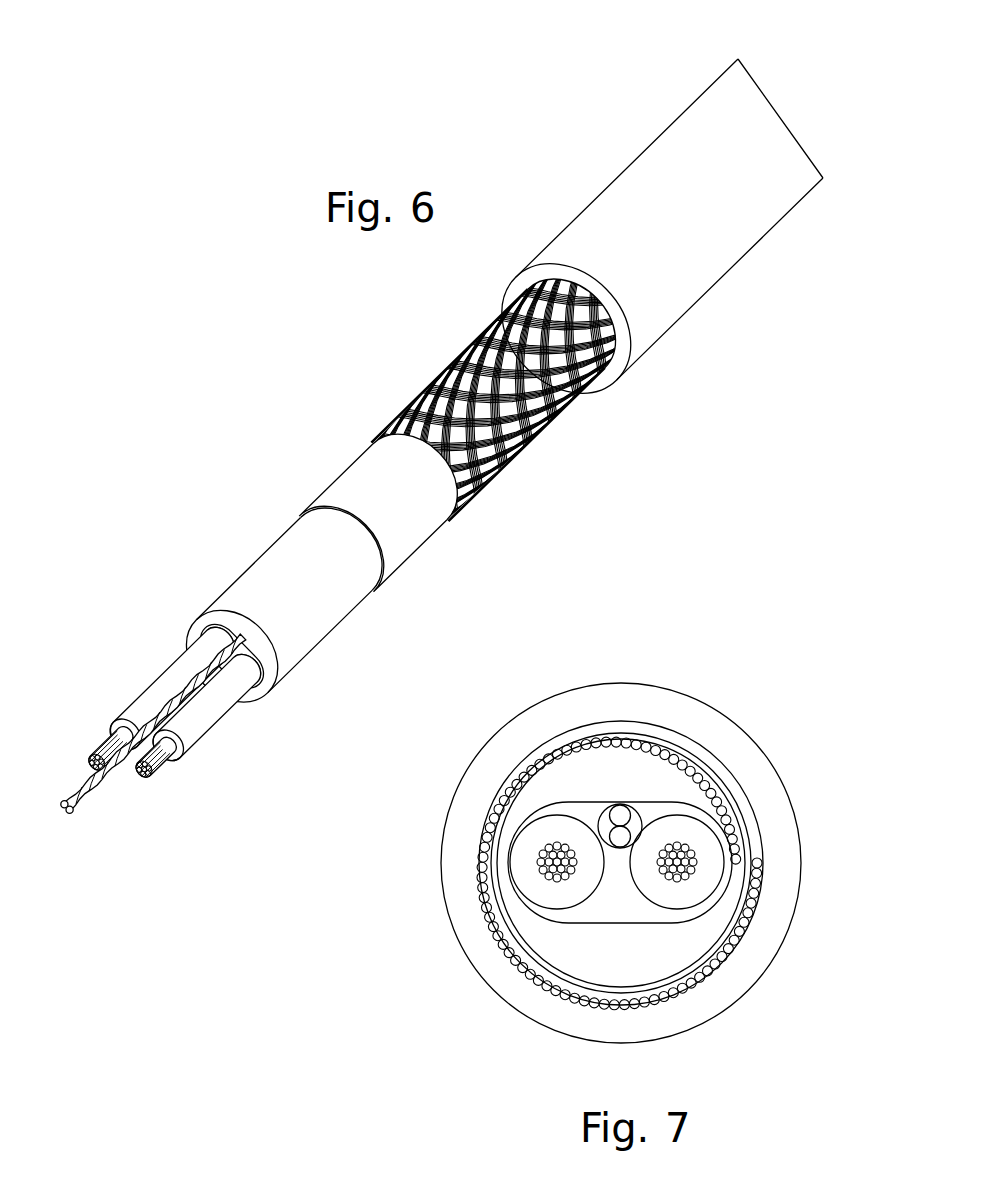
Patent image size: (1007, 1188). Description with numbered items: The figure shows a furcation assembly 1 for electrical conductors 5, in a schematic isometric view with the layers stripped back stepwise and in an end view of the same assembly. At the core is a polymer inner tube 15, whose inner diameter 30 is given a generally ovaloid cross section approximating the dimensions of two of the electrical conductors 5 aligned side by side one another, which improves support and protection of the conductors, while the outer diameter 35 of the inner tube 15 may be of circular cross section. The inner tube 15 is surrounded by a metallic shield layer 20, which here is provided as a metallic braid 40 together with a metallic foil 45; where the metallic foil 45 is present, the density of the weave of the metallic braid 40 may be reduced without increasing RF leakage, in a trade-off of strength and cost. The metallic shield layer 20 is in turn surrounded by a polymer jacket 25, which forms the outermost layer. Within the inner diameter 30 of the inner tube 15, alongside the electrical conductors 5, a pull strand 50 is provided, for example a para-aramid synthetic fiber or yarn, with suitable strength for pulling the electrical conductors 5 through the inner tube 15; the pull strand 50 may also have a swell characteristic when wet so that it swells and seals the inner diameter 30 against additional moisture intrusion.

In FIG. 7, the furcation assembly 1 is at (733, 1045).
In FIG. 6, the electrical conductors 5 is at (112, 747).
In FIG. 7, the electrical conductors 5 is at (553, 867).
In FIG. 6, the inner tube 15 is at (268, 582).
In FIG. 7, the inner tube 15 is at (608, 767).
In FIG. 6, the metallic shield layer 20 is at (447, 522).
In FIG. 7, the metallic shield layer 20 is at (483, 875).
In FIG. 6, the polymer jacket 25 is at (685, 273).
In FIG. 7, the polymer jacket 25 is at (748, 970).
In FIG. 6, the inner diameter 30 is at (193, 628).
In FIG. 7, the inner diameter 30 is at (710, 808).
In FIG. 7, the outer diameter 35 is at (568, 753).
In FIG. 6, the metallic braid 40 is at (420, 410).
In FIG. 7, the metallic braid 40 is at (488, 818).
In FIG. 6, the metallic foil 45 is at (360, 483).
In FIG. 7, the metallic foil 45 is at (530, 768).
In FIG. 6, the pull strand 50 is at (87, 788).
In FIG. 7, the pull strand 50 is at (623, 820).